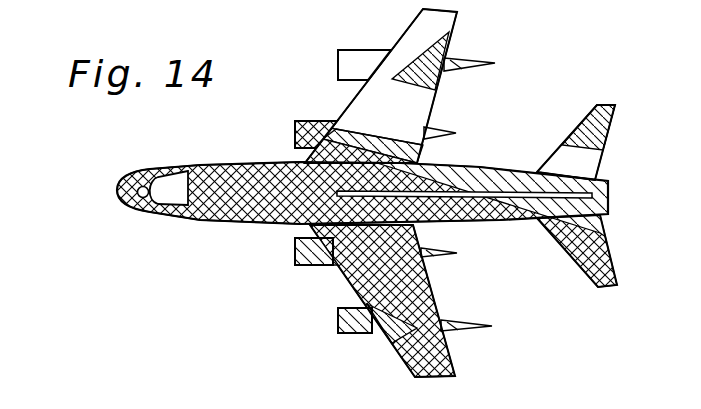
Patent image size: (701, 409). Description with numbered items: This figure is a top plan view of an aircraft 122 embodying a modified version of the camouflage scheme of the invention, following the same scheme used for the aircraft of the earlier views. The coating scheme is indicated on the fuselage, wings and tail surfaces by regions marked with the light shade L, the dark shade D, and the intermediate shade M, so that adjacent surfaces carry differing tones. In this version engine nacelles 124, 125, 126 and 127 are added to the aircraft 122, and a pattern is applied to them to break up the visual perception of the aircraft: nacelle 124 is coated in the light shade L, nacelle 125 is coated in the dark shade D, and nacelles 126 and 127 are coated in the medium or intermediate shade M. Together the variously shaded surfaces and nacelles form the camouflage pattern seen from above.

The aircraft 122 is at (537, 49).
The engine nacelle 124 is at (352, 46).
The engine nacelle 125 is at (312, 120).
The engine nacelle 126 is at (313, 265).
The engine nacelle 127 is at (345, 335).
The light shade L is at (339, 61).
The intermediate shade M is at (438, 82).
The dark shade D is at (295, 134).